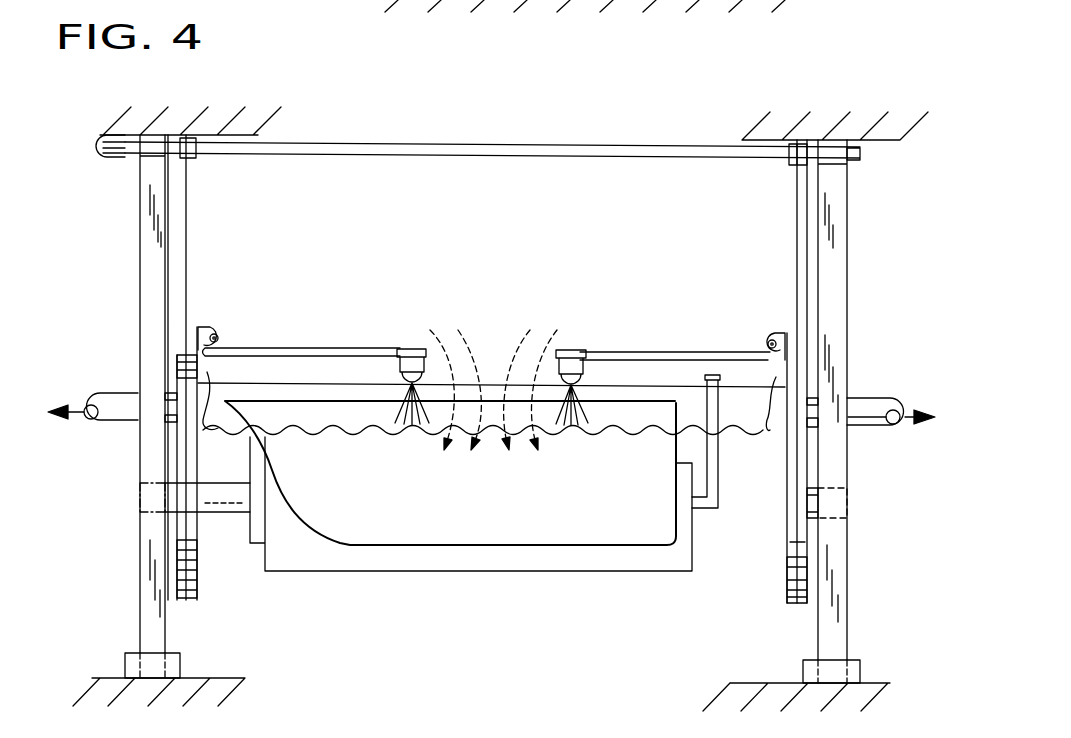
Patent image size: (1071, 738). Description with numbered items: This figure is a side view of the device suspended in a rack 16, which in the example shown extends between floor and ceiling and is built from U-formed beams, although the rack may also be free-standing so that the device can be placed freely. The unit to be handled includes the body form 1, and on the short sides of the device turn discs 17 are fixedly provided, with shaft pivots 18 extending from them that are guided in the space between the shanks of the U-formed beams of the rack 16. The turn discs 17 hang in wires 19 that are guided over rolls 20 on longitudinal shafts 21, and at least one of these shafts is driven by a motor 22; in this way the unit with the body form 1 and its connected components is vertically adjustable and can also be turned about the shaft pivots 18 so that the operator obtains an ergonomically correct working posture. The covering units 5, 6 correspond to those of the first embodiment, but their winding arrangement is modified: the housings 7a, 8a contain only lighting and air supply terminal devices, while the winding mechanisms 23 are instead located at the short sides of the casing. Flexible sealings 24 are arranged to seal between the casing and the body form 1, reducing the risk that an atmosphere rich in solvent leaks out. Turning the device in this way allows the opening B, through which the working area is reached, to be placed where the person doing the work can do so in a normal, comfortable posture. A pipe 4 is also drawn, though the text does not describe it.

The body form 1 is at (495, 528).
The feed pipe 4 is at (116, 406).
The covering unit 5 is at (667, 352).
The covering unit 6 is at (297, 348).
The housing 7a is at (572, 350).
The housing 8a is at (410, 348).
The opening B is at (490, 370).
The rack 16 is at (852, 240).
The turn disc 17 is at (803, 570).
The shaft pivot 18 is at (815, 503).
The wire 19 is at (798, 293).
The roll 20 is at (790, 142).
The longitudinal shaft 21 is at (515, 142).
The motor 22 is at (102, 152).
The winding mechanism 23 is at (222, 327).
The flexible sealing 24 is at (217, 417).